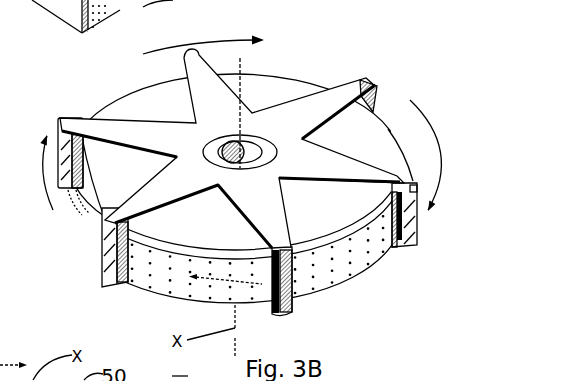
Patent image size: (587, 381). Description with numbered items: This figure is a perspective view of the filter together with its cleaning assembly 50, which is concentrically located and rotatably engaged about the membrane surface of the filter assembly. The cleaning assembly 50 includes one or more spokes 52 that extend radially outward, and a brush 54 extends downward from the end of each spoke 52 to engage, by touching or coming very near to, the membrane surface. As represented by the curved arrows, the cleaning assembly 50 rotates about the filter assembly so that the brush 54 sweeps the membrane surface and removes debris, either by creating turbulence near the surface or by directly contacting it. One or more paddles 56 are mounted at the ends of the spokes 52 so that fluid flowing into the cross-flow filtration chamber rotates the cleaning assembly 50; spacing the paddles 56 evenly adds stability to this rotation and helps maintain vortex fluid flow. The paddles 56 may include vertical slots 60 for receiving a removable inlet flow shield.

The cleaning assembly 50 is at (278, 130).
The spoke 52 is at (366, 78).
The brush 54 is at (393, 250).
The paddle 56 is at (404, 223).
The vertical slot 60 is at (73, 190).